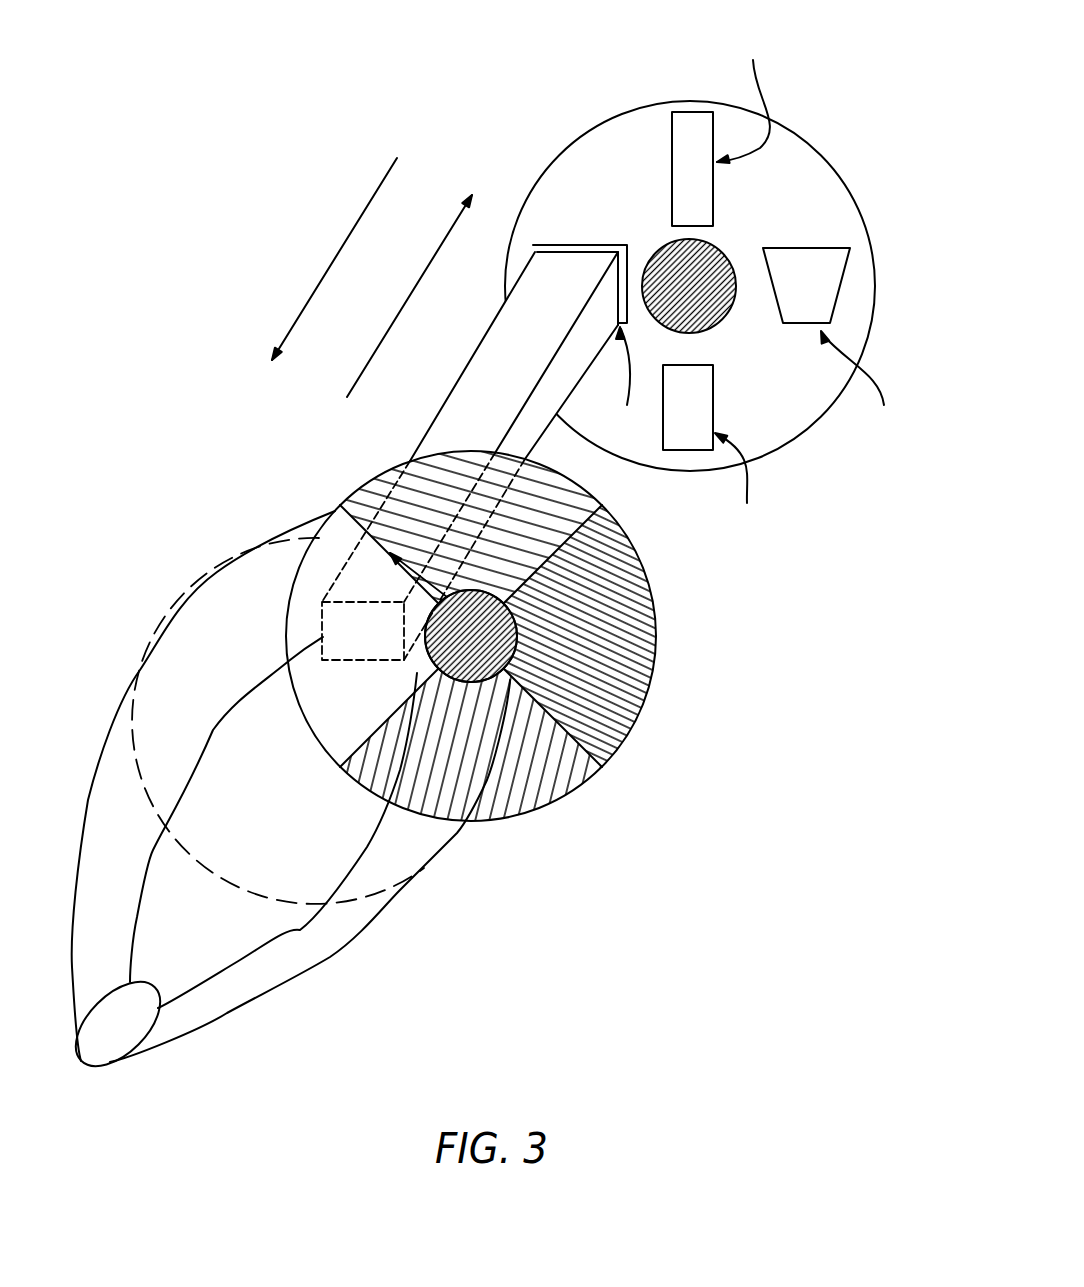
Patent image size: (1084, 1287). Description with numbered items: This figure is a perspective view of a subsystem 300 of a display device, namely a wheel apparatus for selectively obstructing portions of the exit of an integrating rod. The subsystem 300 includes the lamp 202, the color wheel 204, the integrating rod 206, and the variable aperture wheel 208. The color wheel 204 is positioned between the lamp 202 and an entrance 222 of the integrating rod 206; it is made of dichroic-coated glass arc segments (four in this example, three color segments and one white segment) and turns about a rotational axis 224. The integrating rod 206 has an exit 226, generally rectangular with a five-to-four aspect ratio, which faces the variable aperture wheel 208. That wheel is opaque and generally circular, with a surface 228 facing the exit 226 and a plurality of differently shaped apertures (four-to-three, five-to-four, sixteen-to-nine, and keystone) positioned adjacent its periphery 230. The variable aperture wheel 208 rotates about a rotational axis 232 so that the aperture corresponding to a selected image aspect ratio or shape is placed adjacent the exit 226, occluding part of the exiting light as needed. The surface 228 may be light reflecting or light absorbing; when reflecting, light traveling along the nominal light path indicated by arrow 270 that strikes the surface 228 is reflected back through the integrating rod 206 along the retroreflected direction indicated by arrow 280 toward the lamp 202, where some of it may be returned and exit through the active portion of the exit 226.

The subsystem 300 is at (340, 108).
The arrow 280 is at (352, 228).
The arrow 270 is at (373, 355).
The variable aperture wheel 208 is at (719, 273).
The periphery 230 is at (690, 243).
The surface 228 is at (607, 147).
The rotational axis 232 is at (707, 293).
The exit 226 is at (580, 247).
The integrating rod 206 is at (543, 438).
The color wheel 204 is at (638, 720).
The rotational axis 224 is at (500, 645).
The entrance 222 is at (344, 626).
The lamp 202 is at (393, 907).